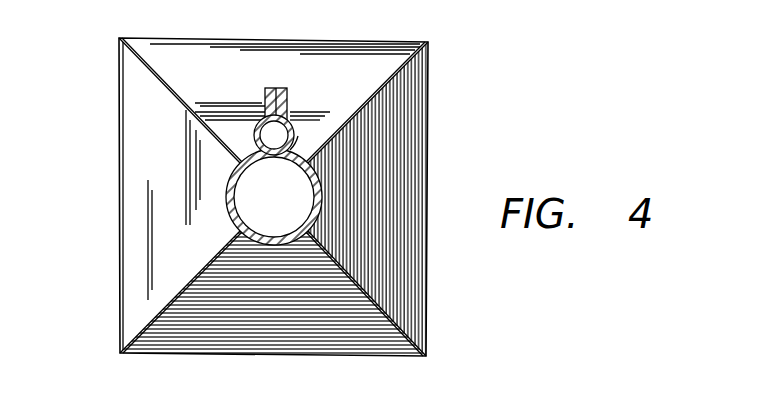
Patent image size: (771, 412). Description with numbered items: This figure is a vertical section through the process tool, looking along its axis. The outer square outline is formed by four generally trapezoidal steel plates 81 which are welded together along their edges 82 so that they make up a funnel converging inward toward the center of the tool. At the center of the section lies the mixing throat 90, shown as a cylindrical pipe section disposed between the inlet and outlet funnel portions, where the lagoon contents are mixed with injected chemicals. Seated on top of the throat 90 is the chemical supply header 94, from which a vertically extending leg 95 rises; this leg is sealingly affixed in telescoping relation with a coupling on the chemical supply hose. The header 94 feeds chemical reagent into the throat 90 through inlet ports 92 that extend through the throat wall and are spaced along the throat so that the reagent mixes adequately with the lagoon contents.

The trapezoidal steel plates 81 is at (246, 14).
The edges 82 is at (395, 60).
The mixing throat 90 is at (228, 222).
The inlet ports 92 is at (258, 150).
The chemical supply header 94 is at (294, 136).
The vertically extending leg 95 is at (264, 108).